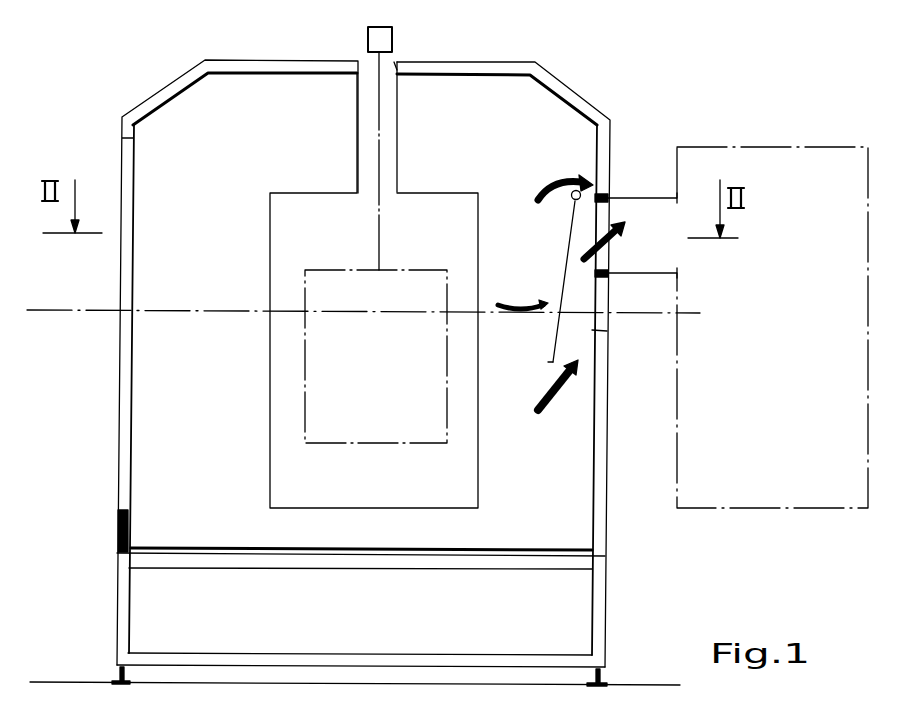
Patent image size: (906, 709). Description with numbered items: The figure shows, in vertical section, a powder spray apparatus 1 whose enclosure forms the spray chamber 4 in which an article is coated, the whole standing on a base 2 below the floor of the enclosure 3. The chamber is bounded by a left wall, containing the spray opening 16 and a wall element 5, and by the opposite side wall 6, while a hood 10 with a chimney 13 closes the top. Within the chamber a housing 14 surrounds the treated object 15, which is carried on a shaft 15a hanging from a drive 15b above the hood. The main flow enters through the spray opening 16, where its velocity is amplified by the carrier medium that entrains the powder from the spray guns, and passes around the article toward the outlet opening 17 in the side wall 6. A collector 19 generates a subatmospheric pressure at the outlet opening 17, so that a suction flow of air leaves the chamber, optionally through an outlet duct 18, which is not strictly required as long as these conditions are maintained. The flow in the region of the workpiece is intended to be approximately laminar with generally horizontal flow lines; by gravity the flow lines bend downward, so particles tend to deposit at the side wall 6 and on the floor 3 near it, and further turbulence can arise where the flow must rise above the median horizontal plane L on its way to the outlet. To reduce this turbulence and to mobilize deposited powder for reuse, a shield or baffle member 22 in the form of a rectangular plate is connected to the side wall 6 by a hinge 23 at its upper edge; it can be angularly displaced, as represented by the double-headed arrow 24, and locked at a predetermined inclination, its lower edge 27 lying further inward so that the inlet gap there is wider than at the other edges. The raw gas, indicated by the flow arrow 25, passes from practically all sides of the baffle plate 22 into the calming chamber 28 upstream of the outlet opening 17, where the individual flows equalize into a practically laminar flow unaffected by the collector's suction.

The apparatus housing 1 is at (612, 402).
The base frame 2 is at (612, 598).
The floor of the enclosure 3 is at (520, 549).
The spray chamber 4 is at (244, 157).
The wall element 5 is at (130, 523).
The side wall 6 is at (592, 474).
The hood 10 is at (511, 90).
The chimney 13 is at (394, 68).
The enclosure 14 is at (315, 240).
The treated object 15 is at (389, 363).
The shaft 15a is at (379, 242).
The drive 15b is at (367, 36).
The spray opening 16 is at (124, 403).
The outlet opening 17 is at (600, 257).
The outlet duct 18 is at (662, 240).
The collector 19 is at (778, 350).
The shield or baffle member 22 is at (545, 322).
The hinge 23 is at (570, 192).
The double-headed arrow 24 is at (523, 292).
The flow arrow 25 is at (562, 370).
The lower edge 27 is at (550, 368).
The calming chamber 28 is at (570, 333).
The median horizontal plane L is at (57, 313).